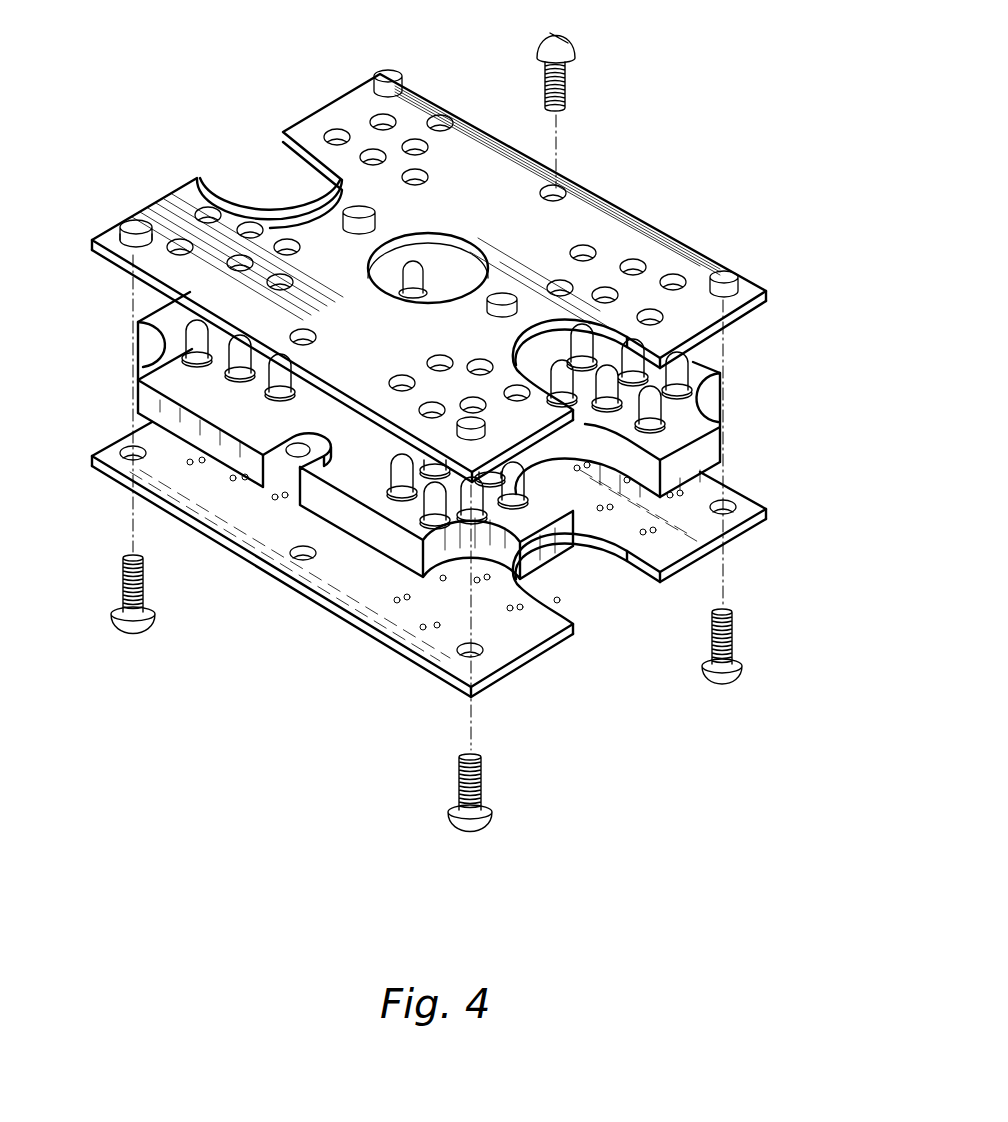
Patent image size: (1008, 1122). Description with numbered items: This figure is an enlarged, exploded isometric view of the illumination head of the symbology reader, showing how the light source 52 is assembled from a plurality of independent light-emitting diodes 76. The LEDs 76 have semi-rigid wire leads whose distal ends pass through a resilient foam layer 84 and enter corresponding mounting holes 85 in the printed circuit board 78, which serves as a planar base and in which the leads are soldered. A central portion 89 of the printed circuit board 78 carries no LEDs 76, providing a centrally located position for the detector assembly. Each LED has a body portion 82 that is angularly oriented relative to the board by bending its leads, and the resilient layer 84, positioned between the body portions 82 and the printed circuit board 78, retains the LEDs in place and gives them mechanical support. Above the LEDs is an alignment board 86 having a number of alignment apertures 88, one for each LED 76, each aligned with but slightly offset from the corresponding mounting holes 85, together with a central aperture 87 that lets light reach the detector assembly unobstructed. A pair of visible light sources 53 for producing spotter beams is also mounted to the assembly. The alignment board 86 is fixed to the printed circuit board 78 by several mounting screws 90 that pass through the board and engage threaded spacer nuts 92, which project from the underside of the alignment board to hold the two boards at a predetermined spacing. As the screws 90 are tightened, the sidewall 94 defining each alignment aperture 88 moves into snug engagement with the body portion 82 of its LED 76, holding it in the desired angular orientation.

The light source 52 is at (683, 150).
The visible light sources 53 is at (358, 210).
The light-emitting diodes 76 is at (175, 312).
The printed circuit board 78 is at (110, 437).
The body portion 82 is at (147, 362).
The resilient foam layer 84 is at (137, 383).
The mounting hole 85 is at (203, 462).
The alignment board 86 is at (136, 220).
The central aperture 87 is at (425, 272).
The alignment apertures 88 is at (211, 212).
The central portion 89 is at (303, 197).
The mounting screws 90 is at (573, 43).
The threaded spacer nuts 92 is at (389, 72).
The sidewall 94 is at (628, 265).